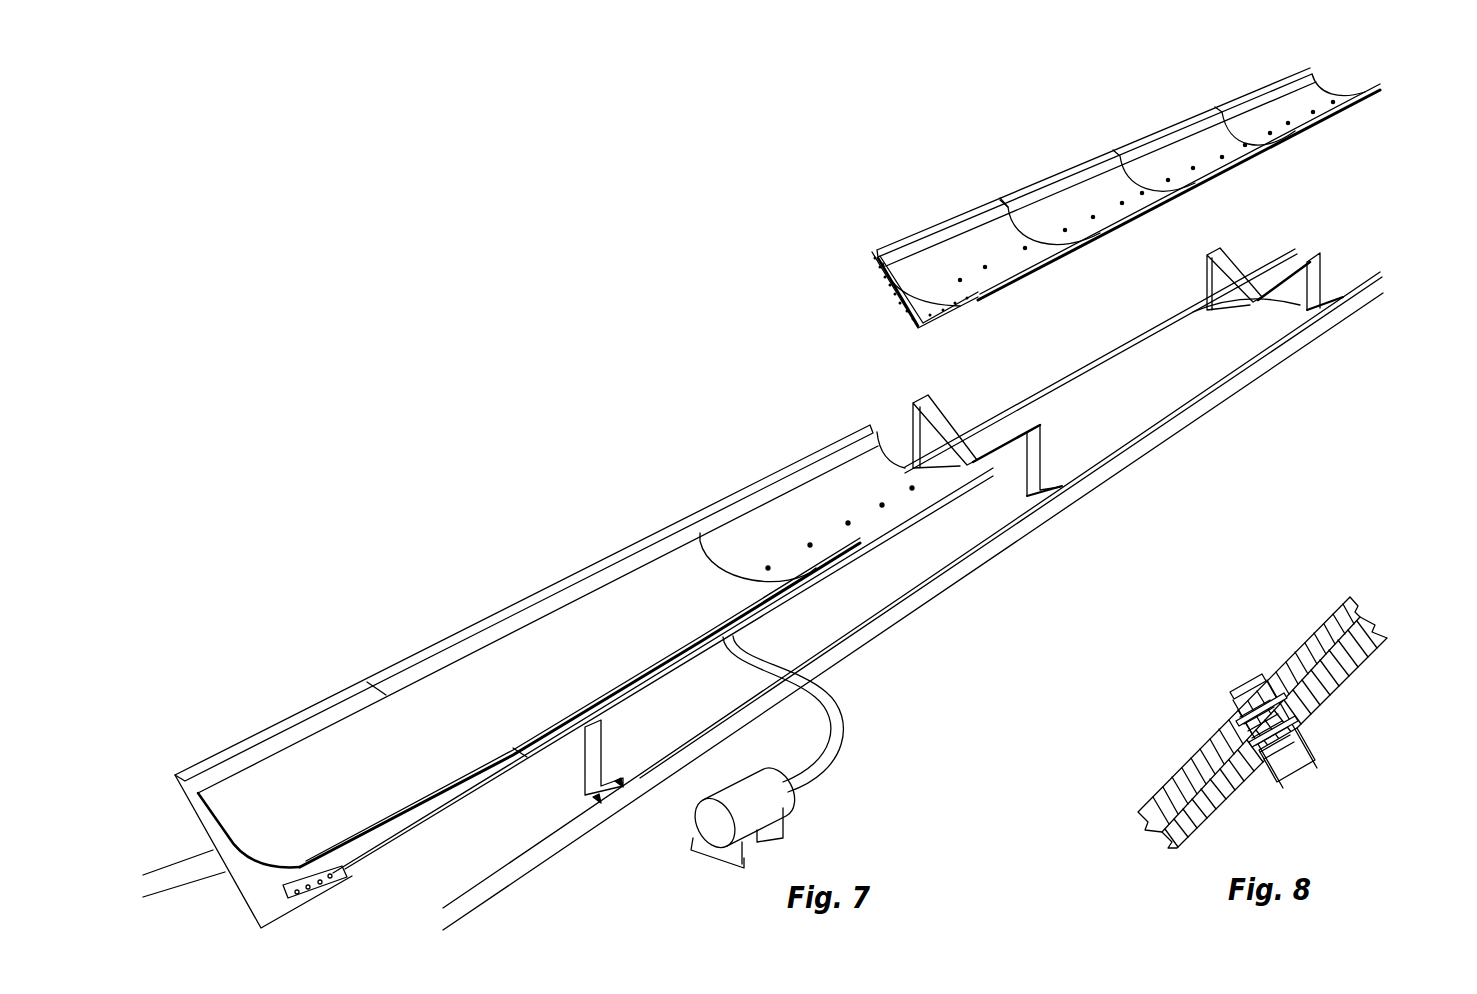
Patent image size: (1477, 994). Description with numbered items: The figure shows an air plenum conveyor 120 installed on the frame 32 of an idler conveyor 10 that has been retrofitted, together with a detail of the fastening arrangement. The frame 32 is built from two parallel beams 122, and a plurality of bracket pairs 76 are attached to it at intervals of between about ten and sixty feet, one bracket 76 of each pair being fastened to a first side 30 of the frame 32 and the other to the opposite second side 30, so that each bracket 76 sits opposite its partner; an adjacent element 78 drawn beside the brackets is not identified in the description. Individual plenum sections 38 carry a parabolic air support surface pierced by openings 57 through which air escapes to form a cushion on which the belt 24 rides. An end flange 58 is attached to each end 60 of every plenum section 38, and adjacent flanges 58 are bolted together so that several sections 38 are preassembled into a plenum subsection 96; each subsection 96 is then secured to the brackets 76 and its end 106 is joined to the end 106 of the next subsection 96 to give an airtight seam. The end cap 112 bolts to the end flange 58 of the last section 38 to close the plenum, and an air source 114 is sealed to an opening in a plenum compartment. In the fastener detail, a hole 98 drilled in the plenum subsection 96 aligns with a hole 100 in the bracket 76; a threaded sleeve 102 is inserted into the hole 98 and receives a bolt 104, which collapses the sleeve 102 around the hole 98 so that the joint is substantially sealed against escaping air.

In FIG. 7, the conveyor apparatus 10 is at (213, 698).
In FIG. 7, the belt 24 is at (340, 810).
In FIG. 7, the side of the frame 30 is at (1220, 390).
In FIG. 7, the frame 32 is at (855, 637).
In FIG. 7, the plenum section 38 is at (327, 712).
In FIG. 7, the openings 57 is at (848, 523).
In FIG. 7, the end flange 58 is at (330, 880).
In FIG. 7, the end of plenum section 60 is at (1000, 200).
In FIG. 7, the bracket 76 is at (577, 770).
In FIG. 8, the bracket 76 is at (1373, 650).
In FIG. 7, the clamp 78 is at (597, 800).
In FIG. 7, the plenum subsection 96 is at (478, 612).
In FIG. 8, the plenum subsection 96 is at (1325, 617).
In FIG. 8, the hole in plenum subsection 98 is at (1268, 682).
In FIG. 8, the hole in bracket 100 is at (1327, 707).
In FIG. 8, the threaded sleeve 102 is at (1223, 720).
In FIG. 8, the bolt 104 is at (1297, 760).
In FIG. 7, the end of plenum subsection 106 is at (880, 430).
In FIG. 7, the end cap 112 is at (250, 872).
In FIG. 7, the air source 114 is at (760, 800).
In FIG. 7, the air plenum conveyor 120 is at (403, 322).
In FIG. 7, the parallel beams 122 is at (1080, 377).